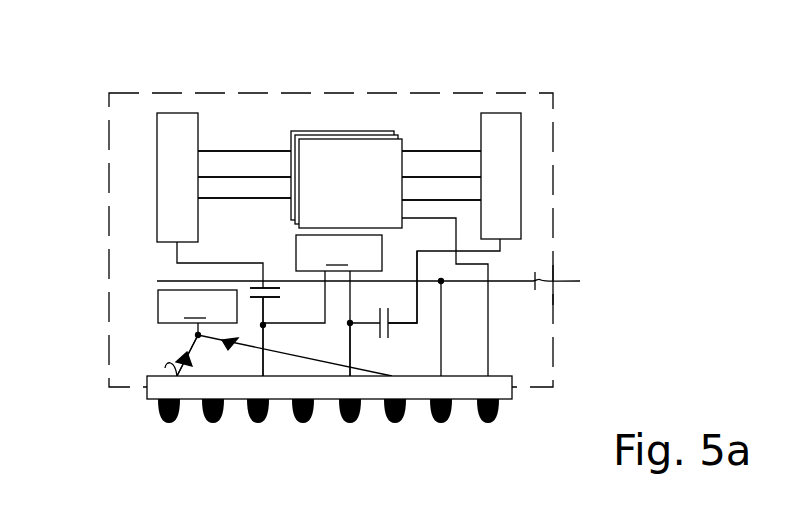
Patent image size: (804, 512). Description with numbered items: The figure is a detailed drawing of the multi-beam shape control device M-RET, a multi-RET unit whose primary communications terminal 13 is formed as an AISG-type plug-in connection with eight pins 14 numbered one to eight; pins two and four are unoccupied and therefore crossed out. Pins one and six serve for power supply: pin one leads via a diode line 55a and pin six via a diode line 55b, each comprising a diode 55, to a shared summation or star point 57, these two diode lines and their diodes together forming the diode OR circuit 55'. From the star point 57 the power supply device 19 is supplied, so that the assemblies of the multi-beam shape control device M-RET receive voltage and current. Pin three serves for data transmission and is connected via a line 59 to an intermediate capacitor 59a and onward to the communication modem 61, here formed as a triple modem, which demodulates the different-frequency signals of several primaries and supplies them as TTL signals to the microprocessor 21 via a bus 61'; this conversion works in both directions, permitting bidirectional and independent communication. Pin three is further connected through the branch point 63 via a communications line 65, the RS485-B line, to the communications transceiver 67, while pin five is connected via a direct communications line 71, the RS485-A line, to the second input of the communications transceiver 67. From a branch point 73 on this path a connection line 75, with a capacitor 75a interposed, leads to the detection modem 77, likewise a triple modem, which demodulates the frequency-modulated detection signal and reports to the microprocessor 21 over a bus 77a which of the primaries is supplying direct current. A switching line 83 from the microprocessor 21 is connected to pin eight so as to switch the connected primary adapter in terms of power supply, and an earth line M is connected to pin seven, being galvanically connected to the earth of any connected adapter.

The primary communications terminal 13 is at (140, 435).
The pins 14 is at (508, 418).
The power supply device 19 is at (197, 312).
The microprocessor 21 is at (340, 165).
The diode 55 is at (150, 355).
The diode OR circuit 55' is at (189, 404).
The diode line 55a is at (165, 368).
The diode line 55b is at (297, 355).
The star point 57 is at (198, 335).
The line 59 is at (262, 358).
The intermediate capacitor 59a is at (278, 285).
The communication modem 61 is at (167, 177).
The bus 61' is at (244, 116).
The branch point 63 is at (266, 326).
The communications line 65 is at (240, 309).
The communications transceiver 67 is at (322, 305).
The communications line 71 is at (352, 354).
The branch point 73 is at (355, 322).
The connection line 75 is at (490, 256).
The capacitor 75a is at (402, 329).
The detection modem 77 is at (500, 172).
The bus 77a is at (439, 141).
The switching line 83 is at (456, 238).
The earth line M is at (441, 335).
The multi-beam shape control device M-RET is at (587, 103).